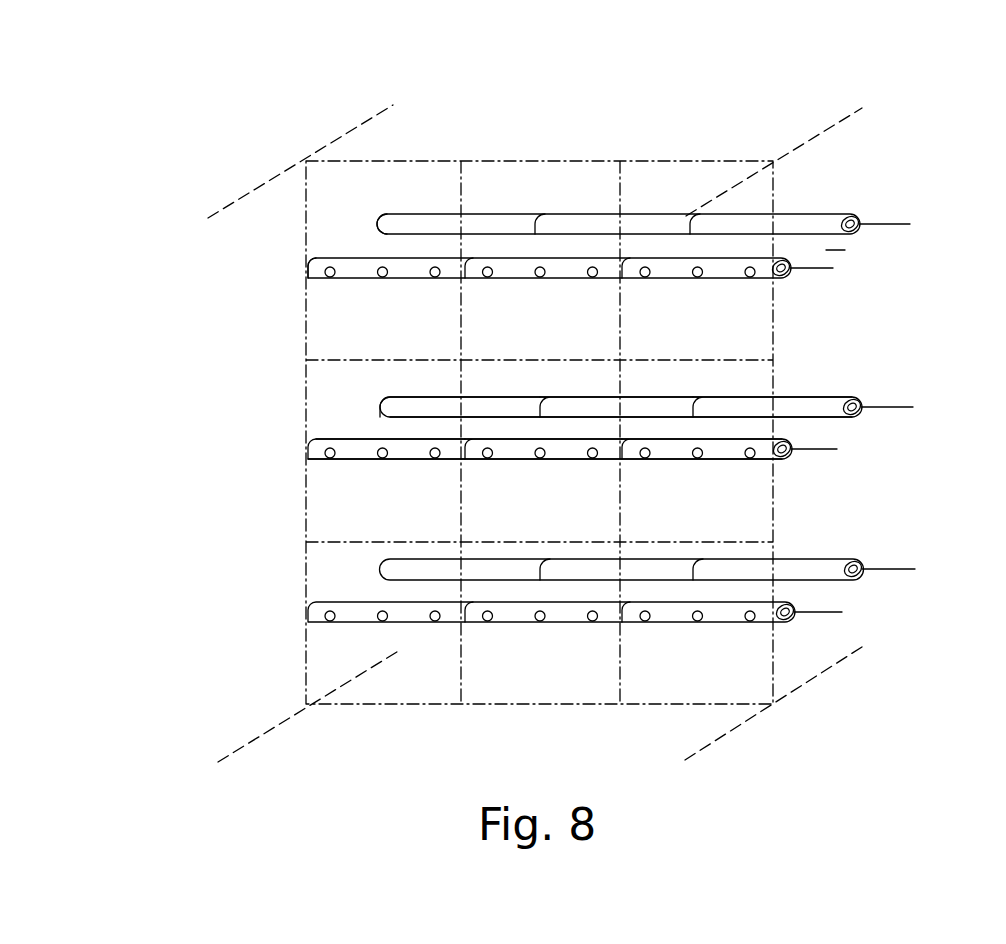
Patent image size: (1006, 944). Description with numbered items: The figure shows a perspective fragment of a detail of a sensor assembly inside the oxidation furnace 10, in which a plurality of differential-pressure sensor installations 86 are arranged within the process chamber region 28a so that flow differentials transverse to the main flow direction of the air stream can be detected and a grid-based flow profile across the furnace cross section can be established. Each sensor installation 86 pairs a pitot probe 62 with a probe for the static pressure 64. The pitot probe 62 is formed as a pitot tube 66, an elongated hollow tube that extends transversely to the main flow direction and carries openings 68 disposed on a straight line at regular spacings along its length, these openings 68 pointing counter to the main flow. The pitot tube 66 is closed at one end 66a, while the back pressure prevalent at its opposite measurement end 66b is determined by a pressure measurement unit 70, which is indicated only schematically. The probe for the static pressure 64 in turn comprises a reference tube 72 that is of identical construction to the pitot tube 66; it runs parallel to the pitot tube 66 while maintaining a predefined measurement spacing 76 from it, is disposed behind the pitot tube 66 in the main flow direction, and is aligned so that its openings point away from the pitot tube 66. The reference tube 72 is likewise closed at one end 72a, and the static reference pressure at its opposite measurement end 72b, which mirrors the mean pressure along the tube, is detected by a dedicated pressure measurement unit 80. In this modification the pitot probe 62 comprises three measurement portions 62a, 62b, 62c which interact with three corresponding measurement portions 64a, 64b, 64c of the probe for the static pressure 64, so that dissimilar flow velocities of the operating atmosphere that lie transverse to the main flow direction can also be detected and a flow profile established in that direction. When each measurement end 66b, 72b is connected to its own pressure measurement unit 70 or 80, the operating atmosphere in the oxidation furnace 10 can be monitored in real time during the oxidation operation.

The oxidation furnace 10 is at (178, 128).
The process chamber portion 28a is at (268, 210).
The reference tube 72 is at (615, 160).
The closed end of reference tube 72a is at (383, 222).
The measurement end of reference tube 72b is at (831, 222).
The pressure measurement unit 80 is at (898, 223).
The measurement spacing 76 is at (826, 250).
The pressure measurement unit 70 is at (826, 270).
The pitot tube 66 is at (520, 306).
The closed end of pitot tube 66a is at (313, 270).
The measurement end of pitot tube 66b is at (762, 273).
The openings 68 is at (378, 274).
The probe for the static pressure 64 is at (576, 257).
The measurement portion of static-pressure probe 64a is at (437, 404).
The measurement portion of static-pressure probe 64b is at (627, 412).
The measurement portion of static-pressure probe 64c is at (790, 406).
The pitot probe 62 is at (507, 414).
The measurement portion of pitot probe 62a is at (367, 459).
The measurement portion of pitot probe 62b is at (532, 453).
The measurement portion of pitot probe 62c is at (733, 448).
The differential-pressure sensor installation 86 is at (368, 248).